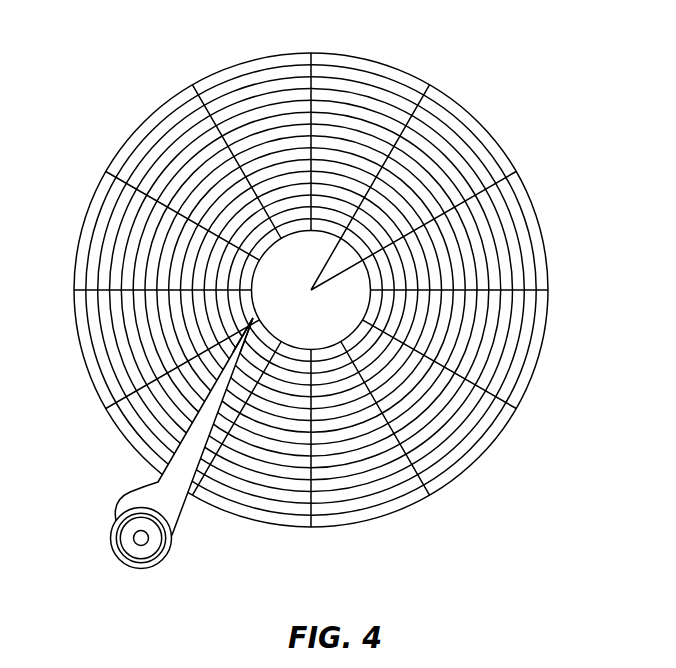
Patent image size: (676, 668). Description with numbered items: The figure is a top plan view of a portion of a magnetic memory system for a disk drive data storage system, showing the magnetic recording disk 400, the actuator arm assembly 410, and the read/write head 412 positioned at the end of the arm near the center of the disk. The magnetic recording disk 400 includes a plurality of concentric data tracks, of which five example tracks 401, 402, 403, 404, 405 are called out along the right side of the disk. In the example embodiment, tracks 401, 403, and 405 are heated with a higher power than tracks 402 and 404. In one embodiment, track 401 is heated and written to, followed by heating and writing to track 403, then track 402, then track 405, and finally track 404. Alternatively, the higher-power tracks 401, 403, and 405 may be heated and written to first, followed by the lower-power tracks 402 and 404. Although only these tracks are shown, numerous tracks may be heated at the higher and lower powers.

The magnetic recording disk 400 is at (140, 108).
The track 401 is at (518, 403).
The track 402 is at (455, 335).
The track 403 is at (472, 318).
The track 404 is at (485, 302).
The track 405 is at (495, 277).
The actuator arm assembly 410 is at (178, 500).
The read/write head 412 is at (250, 314).